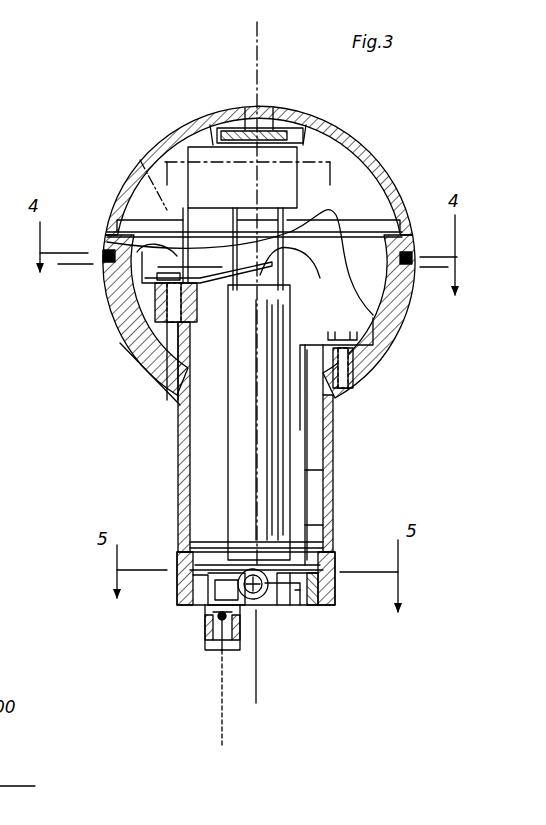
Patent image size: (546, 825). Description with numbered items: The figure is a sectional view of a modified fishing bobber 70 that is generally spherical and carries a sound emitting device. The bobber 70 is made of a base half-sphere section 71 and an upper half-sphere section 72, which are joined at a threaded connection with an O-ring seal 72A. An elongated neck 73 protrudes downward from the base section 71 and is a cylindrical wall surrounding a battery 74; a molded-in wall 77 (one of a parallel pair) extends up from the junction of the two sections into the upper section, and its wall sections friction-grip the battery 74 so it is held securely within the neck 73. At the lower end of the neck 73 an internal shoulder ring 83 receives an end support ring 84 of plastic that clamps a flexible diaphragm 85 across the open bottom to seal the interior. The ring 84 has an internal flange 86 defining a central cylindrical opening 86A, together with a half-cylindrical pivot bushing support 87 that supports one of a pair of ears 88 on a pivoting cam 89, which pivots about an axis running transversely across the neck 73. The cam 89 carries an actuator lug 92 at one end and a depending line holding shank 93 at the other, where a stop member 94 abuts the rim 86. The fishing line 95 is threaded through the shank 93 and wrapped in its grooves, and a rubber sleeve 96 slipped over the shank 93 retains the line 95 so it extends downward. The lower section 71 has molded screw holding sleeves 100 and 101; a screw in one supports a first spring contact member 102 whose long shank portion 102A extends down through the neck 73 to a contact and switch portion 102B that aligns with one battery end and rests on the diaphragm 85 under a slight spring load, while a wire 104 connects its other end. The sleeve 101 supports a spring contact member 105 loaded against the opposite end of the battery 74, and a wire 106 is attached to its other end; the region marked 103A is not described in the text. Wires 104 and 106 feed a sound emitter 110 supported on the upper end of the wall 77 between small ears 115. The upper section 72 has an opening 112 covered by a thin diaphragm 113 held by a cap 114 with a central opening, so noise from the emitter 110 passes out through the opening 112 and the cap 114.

The bobber 70 is at (231, 247).
The base half-sphere section 71 is at (108, 327).
The upper half-sphere section 72 is at (327, 118).
The O-ring seal 72A is at (103, 254).
The neck 73 is at (178, 482).
The battery 74 is at (292, 478).
The wall 77 is at (208, 442).
The internal shoulder ring 83 is at (322, 545).
The end support ring 84 is at (167, 595).
The flexible diaphragm 85 is at (222, 575).
The internal flange 86 is at (330, 600).
The central cylindrical opening 86A is at (283, 610).
The pivot bushing support 87 is at (260, 612).
The ear 88 is at (245, 583).
The pivoting cam 89 is at (312, 592).
The actuator lug 92 is at (300, 610).
The line holding shank 93 is at (207, 630).
The stop member 94 is at (205, 598).
The fishing line 95 is at (226, 725).
The rubber sleeve 96 is at (215, 648).
The screw holding sleeve 100 is at (360, 357).
The screw holding sleeve 101 is at (128, 355).
The first spring contact member 102 is at (310, 420).
The shank portion 102A is at (305, 453).
The contact and switch portion 102B is at (304, 521).
The bracket 103A is at (317, 270).
The wire 104 is at (405, 322).
The spring contact member 105 is at (212, 300).
The wire 106 is at (228, 256).
The sound emitter 110 is at (287, 178).
The opening 112 is at (247, 120).
The diaphragm 113 is at (268, 120).
The cap 114 is at (215, 130).
The ears 115 is at (188, 200).